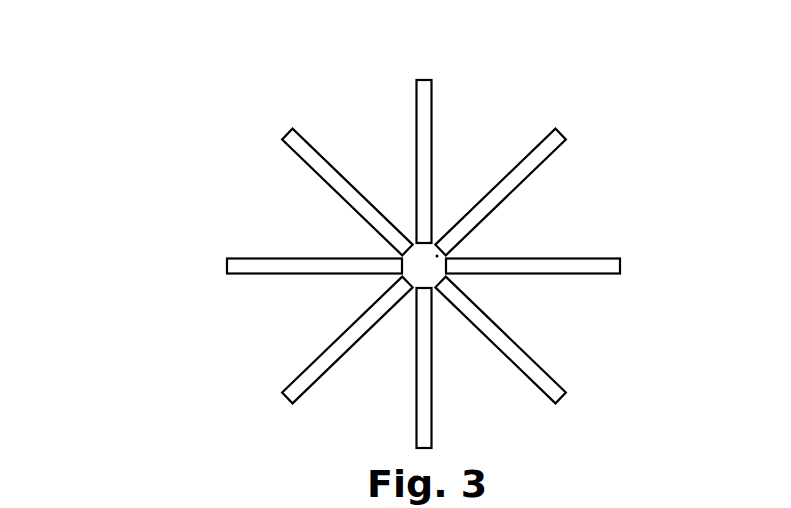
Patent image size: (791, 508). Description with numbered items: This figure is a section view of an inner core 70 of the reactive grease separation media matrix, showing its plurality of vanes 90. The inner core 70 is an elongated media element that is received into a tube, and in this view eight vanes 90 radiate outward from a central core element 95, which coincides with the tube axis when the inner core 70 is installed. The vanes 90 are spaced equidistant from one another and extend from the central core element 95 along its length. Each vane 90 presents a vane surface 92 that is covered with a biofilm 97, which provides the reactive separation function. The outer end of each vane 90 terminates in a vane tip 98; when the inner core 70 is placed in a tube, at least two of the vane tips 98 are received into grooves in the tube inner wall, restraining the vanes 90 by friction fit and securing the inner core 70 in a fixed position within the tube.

The inner core 70 is at (258, 323).
The vane 90 is at (163, 319).
The vane surface 92 is at (532, 144).
The central core element 95 is at (437, 256).
The biofilm 97 is at (415, 127).
The vane tip 98 is at (424, 80).